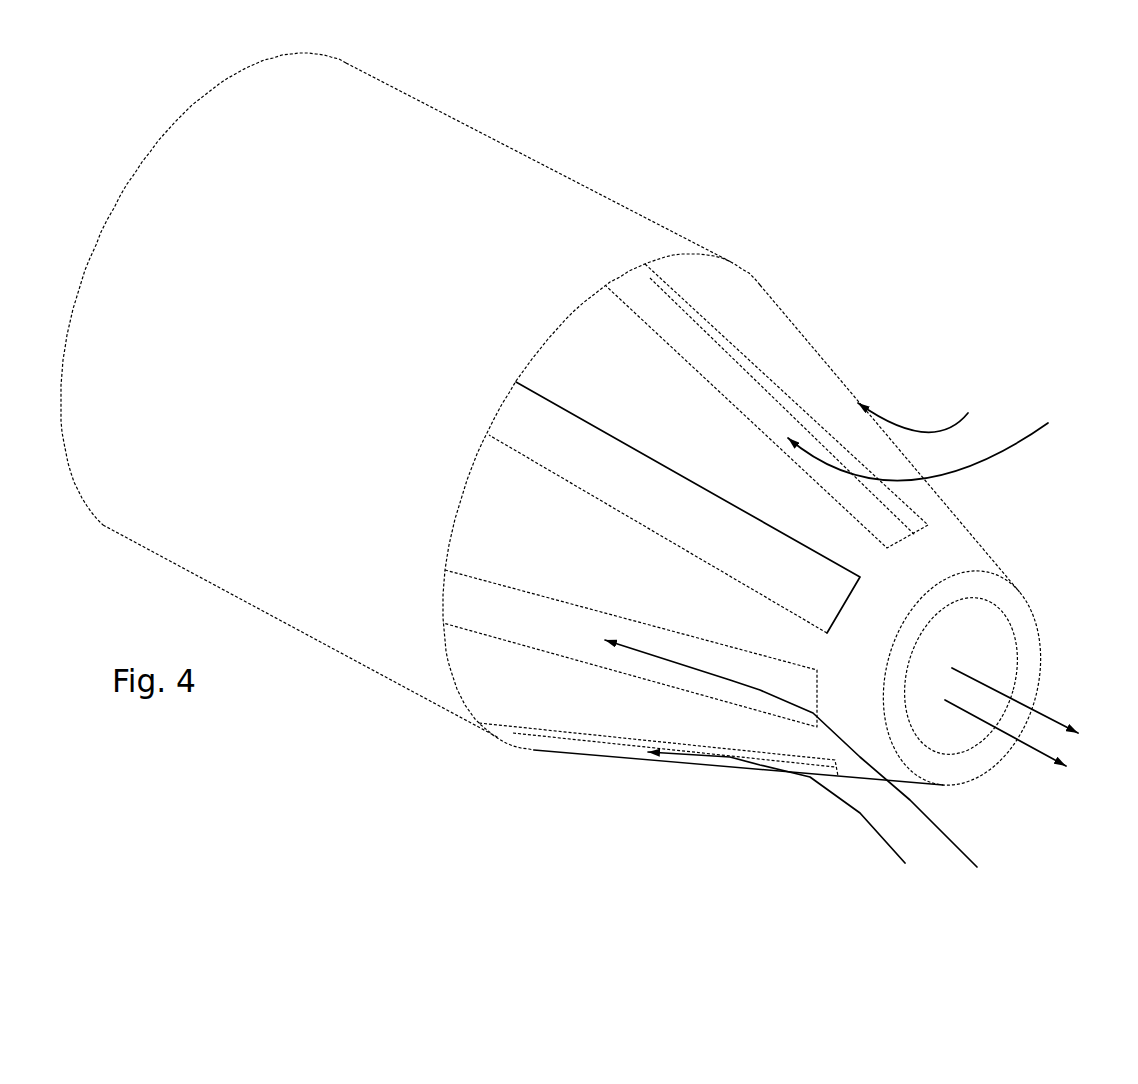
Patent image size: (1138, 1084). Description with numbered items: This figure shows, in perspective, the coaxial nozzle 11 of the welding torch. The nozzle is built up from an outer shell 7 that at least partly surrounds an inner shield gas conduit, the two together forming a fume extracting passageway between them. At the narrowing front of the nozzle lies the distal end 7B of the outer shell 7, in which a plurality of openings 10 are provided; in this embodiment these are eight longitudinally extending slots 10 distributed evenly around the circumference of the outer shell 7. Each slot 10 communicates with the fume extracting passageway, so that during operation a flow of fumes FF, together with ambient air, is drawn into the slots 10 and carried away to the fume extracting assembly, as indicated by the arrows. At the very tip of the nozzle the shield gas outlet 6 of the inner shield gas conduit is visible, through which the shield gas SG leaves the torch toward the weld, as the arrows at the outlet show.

The outer shell 7 is at (500, 195).
The coaxial nozzle 11 is at (582, 225).
The distal end of the outer shell 7B is at (837, 403).
The longitudinally extending slots 10 is at (723, 540).
The shield gas outlet 6 is at (978, 658).
The flow of fumes FF is at (826, 629).
The shield gas SG is at (1030, 721).